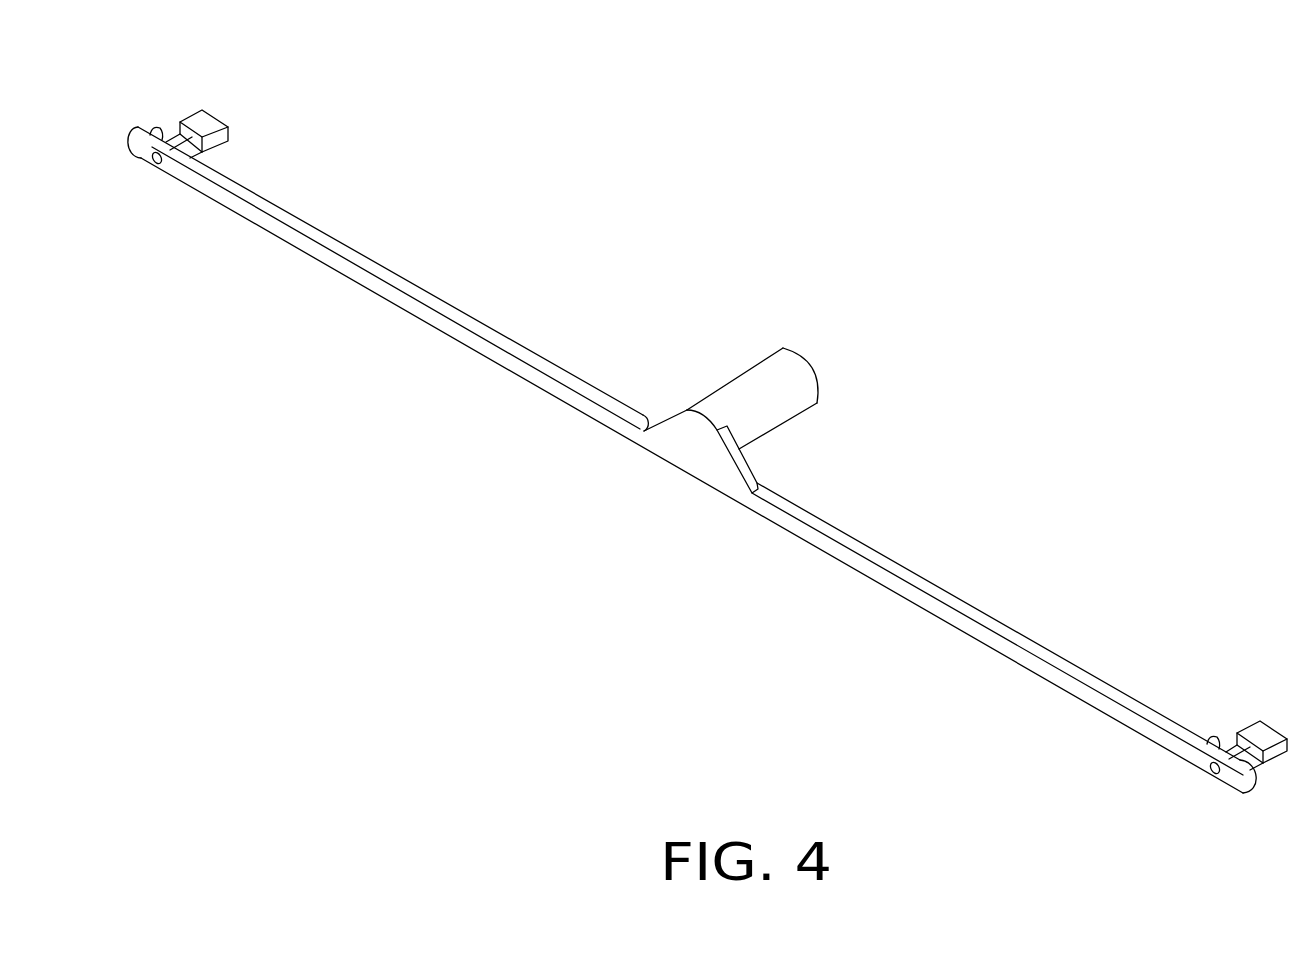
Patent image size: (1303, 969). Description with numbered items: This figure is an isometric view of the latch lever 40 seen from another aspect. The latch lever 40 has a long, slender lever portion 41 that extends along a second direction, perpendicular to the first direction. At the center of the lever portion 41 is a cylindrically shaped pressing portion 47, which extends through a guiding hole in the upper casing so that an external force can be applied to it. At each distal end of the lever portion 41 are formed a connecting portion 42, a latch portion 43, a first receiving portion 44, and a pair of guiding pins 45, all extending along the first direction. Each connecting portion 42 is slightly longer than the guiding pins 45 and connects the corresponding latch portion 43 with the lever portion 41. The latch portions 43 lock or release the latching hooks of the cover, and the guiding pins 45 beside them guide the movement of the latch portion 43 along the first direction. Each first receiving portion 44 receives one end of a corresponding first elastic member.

The latch lever 40 is at (538, 320).
The lever portion 41 is at (398, 288).
The connecting portion 42 is at (191, 143).
The latch portion 43 is at (208, 125).
The first receiving portion 44 is at (155, 161).
The guiding pin 45 is at (158, 128).
The pressing portion 47 is at (792, 390).